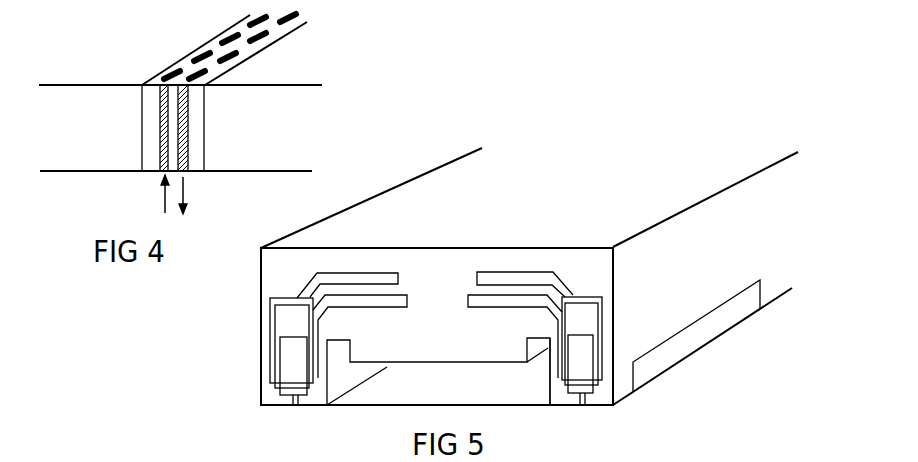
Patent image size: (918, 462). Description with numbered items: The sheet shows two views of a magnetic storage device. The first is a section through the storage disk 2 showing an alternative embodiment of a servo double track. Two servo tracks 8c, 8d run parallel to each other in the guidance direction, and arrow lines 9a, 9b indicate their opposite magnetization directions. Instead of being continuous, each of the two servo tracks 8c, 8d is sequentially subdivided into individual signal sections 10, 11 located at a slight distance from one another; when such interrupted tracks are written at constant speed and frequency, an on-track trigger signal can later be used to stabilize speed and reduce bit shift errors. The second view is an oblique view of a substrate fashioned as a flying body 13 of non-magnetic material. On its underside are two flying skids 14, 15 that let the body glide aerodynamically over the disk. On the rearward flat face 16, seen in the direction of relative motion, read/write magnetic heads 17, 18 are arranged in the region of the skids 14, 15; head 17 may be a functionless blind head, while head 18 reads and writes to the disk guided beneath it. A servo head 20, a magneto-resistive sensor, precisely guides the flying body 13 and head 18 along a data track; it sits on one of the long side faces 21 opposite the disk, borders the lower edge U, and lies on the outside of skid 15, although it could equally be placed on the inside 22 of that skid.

In FIG. 4, the storage disk 2 is at (322, 141).
In FIG. 4, the servo track 8c is at (188, 130).
In FIG. 4, the servo track 8d is at (160, 130).
In FIG. 4, the arrow line 9a is at (162, 197).
In FIG. 4, the arrow line 9b is at (187, 197).
In FIG. 4, the signal section 10 is at (250, 62).
In FIG. 4, the signal section 11 is at (220, 42).
In FIG. 5, the flying body 13 is at (437, 276).
In FIG. 5, the flying skid 14 is at (322, 406).
In FIG. 5, the flying skid 15 is at (560, 405).
In FIG. 5, the rearward flat face 16 is at (438, 359).
In FIG. 5, the read/write magnetic head 17 is at (298, 352).
In FIG. 5, the read/write magnetic head 18 is at (577, 350).
In FIG. 5, the servo head 20 is at (660, 358).
In FIG. 5, the long side face 21 is at (705, 203).
In FIG. 5, the inside of skid 22 is at (550, 377).
In FIG. 5, the lower edge U is at (764, 305).